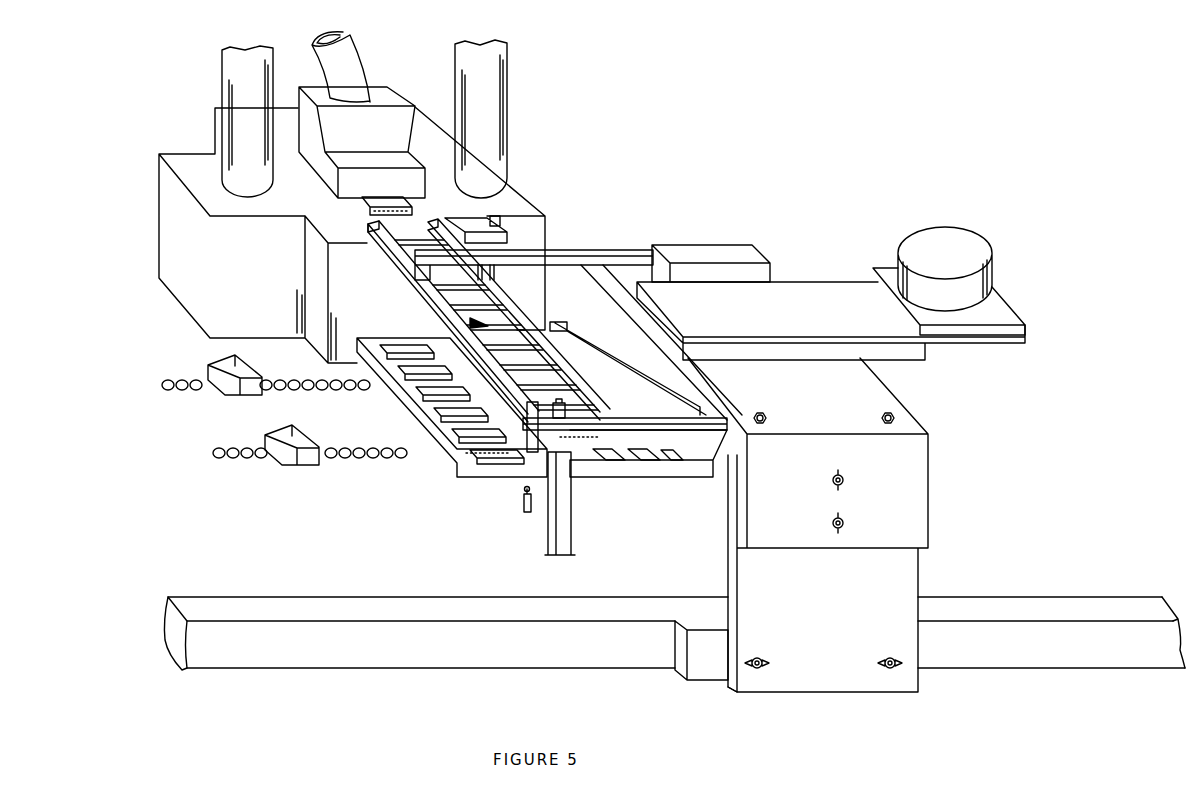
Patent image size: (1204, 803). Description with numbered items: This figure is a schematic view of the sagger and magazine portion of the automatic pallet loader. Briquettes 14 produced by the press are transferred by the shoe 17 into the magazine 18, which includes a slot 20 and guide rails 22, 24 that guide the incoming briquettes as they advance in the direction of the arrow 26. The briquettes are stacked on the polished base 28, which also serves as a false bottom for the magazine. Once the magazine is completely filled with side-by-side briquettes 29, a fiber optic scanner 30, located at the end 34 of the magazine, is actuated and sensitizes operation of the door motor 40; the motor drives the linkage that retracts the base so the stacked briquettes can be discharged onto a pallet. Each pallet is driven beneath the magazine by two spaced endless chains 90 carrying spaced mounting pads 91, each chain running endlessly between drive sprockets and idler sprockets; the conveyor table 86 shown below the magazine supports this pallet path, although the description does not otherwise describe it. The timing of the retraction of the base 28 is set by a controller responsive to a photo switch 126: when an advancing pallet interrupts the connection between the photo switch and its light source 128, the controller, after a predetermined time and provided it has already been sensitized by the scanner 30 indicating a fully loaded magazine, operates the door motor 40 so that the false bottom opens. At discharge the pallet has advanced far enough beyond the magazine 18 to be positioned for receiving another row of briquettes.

The briquettes 14 is at (362, 201).
The shoe 17 is at (372, 140).
The magazine 18 is at (598, 451).
The slot 20 is at (620, 461).
The guide rail 22 is at (447, 215).
The guide rail 24 is at (420, 291).
The arrow 26 is at (366, 226).
The polished base 28 is at (418, 238).
The side-by-side briquettes 29 is at (470, 323).
The fiber optic scanner 30 is at (562, 400).
The end of the magazine 34 is at (548, 455).
The door motor 40 is at (957, 244).
The table 86 is at (475, 473).
The endless chain 90 is at (190, 377).
The mounting pad 91 is at (280, 437).
The photo switch 126 is at (532, 412).
The light source 128 is at (523, 503).